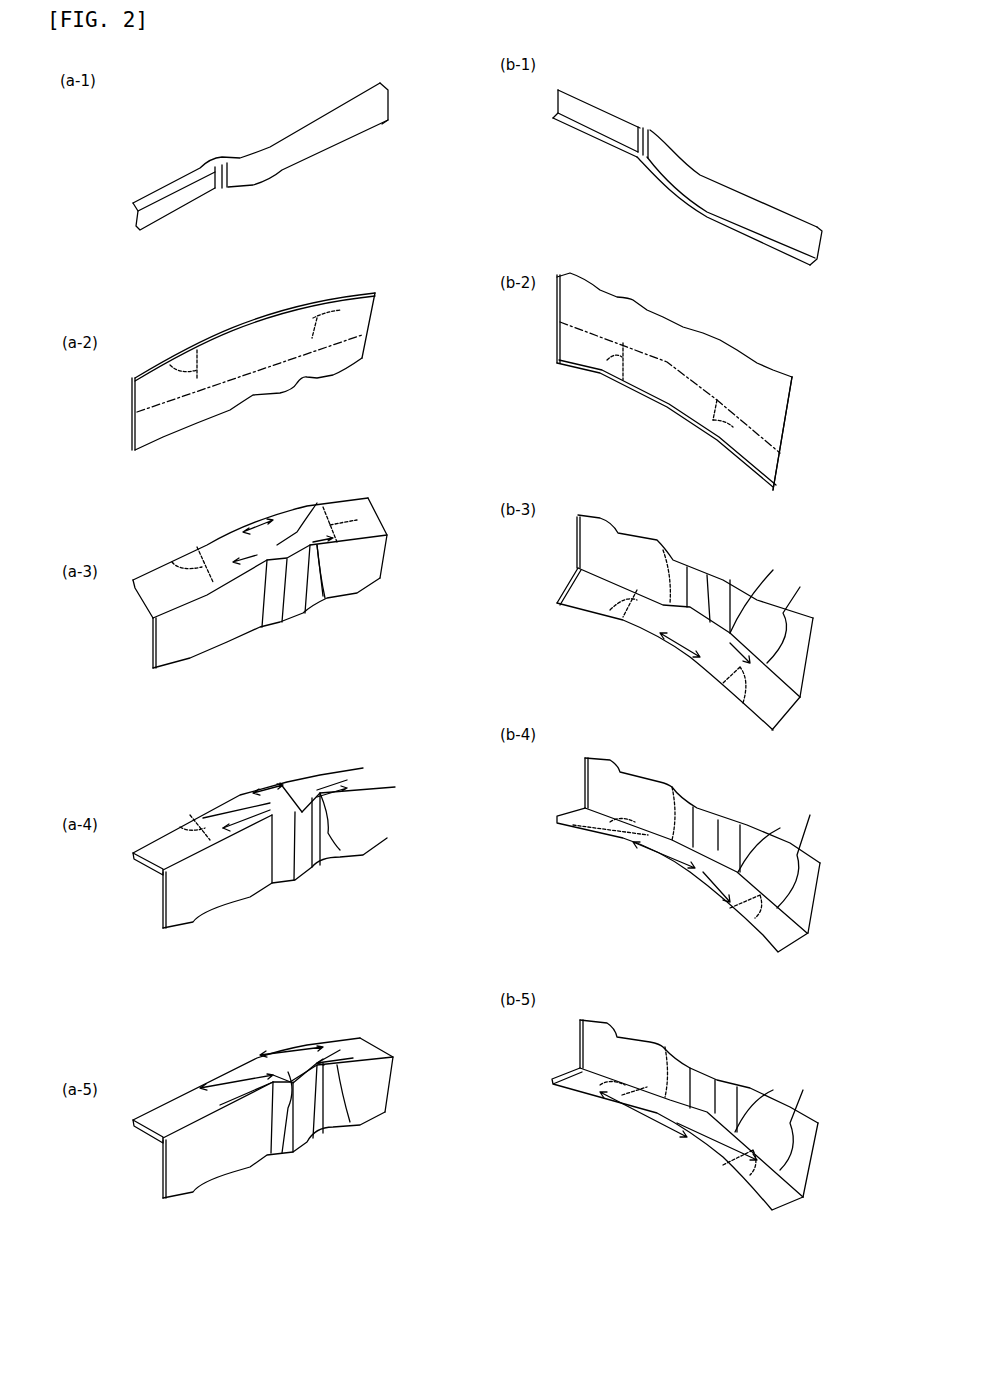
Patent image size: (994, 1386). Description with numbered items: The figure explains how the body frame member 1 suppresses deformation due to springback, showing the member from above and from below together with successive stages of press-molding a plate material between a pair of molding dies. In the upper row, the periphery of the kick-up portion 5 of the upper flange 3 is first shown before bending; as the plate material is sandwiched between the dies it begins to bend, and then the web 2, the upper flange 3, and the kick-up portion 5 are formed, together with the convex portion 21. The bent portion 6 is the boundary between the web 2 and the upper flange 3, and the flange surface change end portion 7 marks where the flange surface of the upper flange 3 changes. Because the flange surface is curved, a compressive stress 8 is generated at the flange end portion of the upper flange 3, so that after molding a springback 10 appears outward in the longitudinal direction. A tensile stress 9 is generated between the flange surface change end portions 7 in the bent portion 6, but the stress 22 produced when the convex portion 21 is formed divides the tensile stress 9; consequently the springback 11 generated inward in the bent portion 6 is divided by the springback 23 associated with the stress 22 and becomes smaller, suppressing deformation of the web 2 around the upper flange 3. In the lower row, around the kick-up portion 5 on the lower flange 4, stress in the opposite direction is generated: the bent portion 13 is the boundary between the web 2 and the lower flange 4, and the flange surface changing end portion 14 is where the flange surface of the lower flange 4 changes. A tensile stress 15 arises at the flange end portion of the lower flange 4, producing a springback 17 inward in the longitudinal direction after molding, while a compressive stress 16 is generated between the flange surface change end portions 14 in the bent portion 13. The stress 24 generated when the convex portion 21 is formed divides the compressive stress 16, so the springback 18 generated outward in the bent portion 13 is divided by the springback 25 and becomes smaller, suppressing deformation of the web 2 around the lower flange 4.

The body frame member 1 is at (396, 100).
The web 2 is at (165, 212).
The upper flange 3 is at (142, 200).
The lower flange 4 is at (134, 230).
The kick-up portion 5 is at (238, 148).
The bent portion 6 is at (330, 345).
The flange surface change end portion 7 is at (162, 355).
The compressive stress 8 is at (238, 527).
The tensile stress 9 is at (325, 598).
The springback 10 is at (255, 1057).
The springback 11 is at (352, 1123).
The bent portion 13 is at (747, 420).
The flange surface changing end portion 14 is at (610, 365).
The tensile stress 15 is at (677, 650).
The compressive stress 16 is at (663, 550).
The springback 17 is at (700, 1155).
The springback 18 is at (665, 1047).
The convex portion 21 is at (220, 195).
The stress 22 is at (310, 513).
The springback 23 is at (282, 1155).
The stress 24 is at (761, 715).
The springback 25 is at (760, 1101).